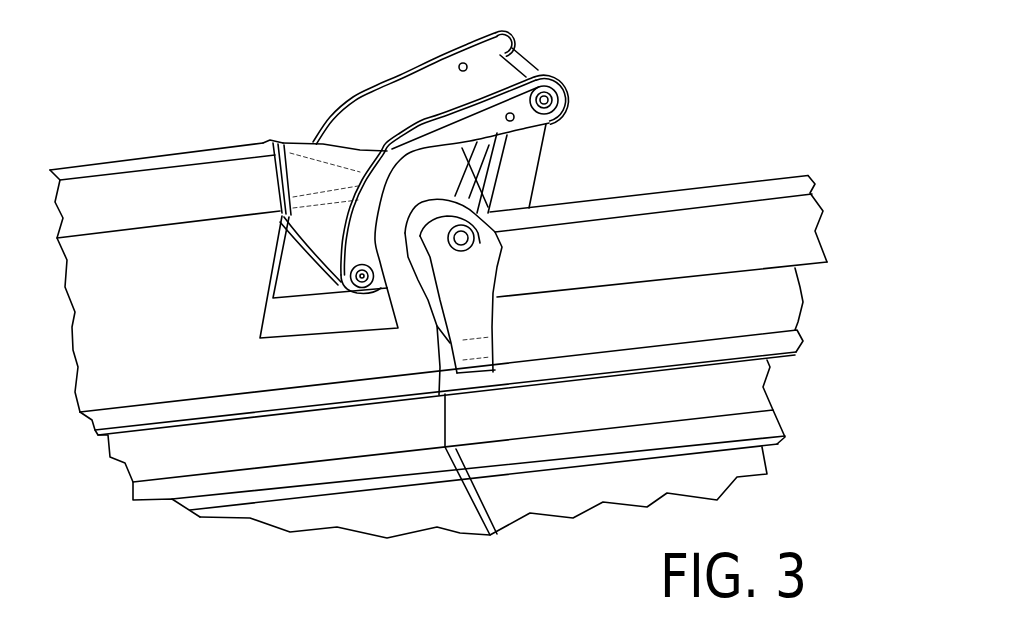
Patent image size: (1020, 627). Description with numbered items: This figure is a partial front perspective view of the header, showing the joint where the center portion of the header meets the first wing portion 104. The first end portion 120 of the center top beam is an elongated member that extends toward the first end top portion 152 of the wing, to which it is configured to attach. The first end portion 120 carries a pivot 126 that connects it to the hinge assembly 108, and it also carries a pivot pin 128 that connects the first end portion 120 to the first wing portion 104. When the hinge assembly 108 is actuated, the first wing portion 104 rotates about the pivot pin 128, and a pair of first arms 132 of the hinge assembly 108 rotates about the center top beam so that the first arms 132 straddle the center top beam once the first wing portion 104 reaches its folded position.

The first wing portion 104 is at (713, 186).
The hinge assembly 108 is at (527, 56).
The first end portion 120 is at (307, 182).
The pivot 126 is at (366, 279).
The pivot pin 128 is at (474, 238).
The first arms 132 is at (377, 85).
The first end top portion 152 is at (472, 258).